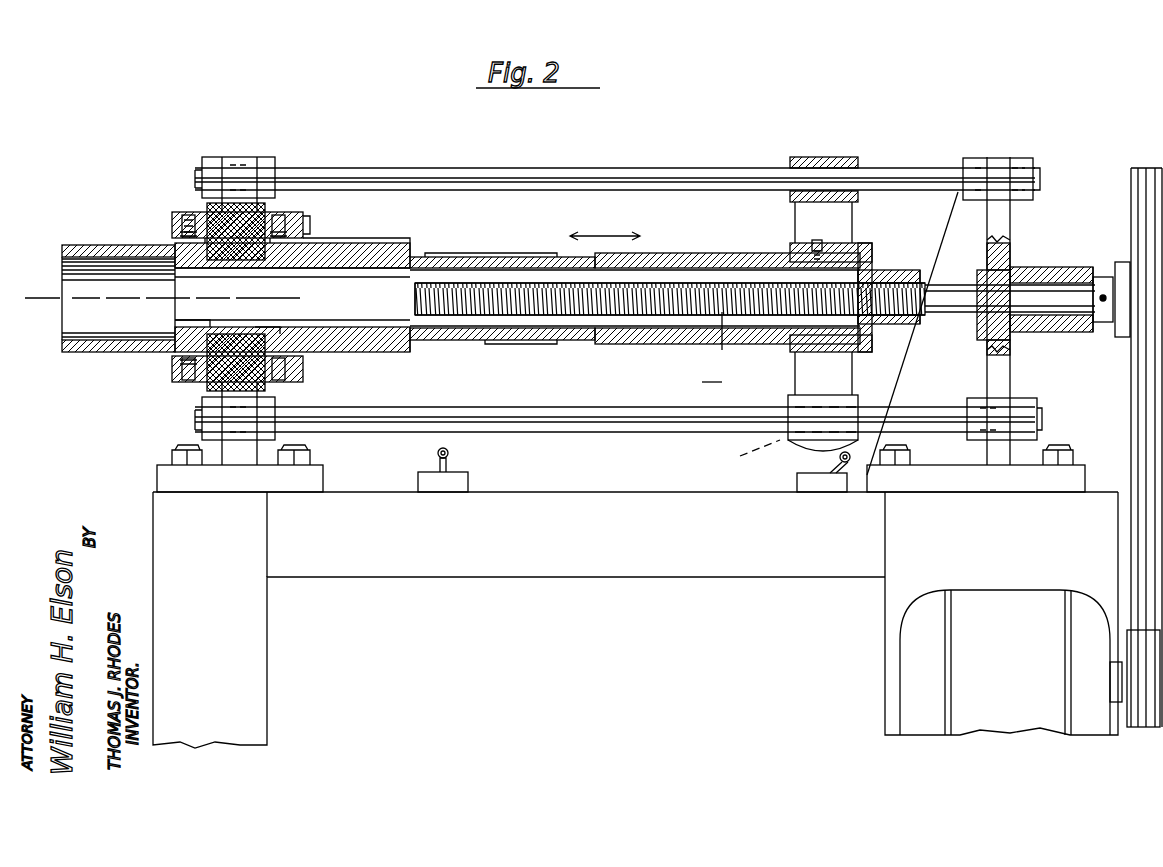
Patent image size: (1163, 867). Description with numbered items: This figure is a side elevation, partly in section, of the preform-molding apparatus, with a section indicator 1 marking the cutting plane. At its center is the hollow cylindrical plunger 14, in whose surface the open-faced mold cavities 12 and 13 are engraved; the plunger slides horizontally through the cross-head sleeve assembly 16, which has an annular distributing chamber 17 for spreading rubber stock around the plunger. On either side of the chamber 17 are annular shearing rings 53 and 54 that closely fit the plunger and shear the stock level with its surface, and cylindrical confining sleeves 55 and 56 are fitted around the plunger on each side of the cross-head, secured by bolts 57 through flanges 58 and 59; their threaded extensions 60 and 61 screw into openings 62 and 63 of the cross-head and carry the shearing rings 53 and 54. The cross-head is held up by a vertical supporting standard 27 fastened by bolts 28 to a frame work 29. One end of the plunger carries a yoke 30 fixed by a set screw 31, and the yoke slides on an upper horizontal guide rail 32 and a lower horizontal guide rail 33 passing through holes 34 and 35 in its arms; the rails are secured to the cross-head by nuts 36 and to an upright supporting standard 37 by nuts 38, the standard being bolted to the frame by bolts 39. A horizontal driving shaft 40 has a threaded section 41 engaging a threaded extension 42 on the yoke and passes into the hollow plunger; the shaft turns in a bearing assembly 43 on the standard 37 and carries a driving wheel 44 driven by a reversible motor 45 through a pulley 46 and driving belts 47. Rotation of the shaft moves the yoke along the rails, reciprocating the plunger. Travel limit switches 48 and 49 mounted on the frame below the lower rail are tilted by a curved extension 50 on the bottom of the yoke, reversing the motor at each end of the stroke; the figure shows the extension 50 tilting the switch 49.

The section line / lead screw axis 1 is at (41, 310).
The mold cavity 12 is at (335, 252).
The mold cavity 13 is at (530, 258).
The cylindrical plunger 14 is at (705, 257).
The cross-head sleeve assembly 16 is at (159, 213).
The annular distributing chamber 17 is at (210, 385).
The vertical supporting standard 27 is at (240, 475).
The bolts 28 is at (170, 452).
The frame work 29 is at (635, 620).
The yoke 30 is at (845, 248).
The set screw 31 is at (812, 236).
The upper horizontal guide rail 32 is at (645, 158).
The lower horizontal guide rail 33 is at (590, 432).
The hole 34 is at (805, 145).
The hole 35 is at (786, 438).
The nuts 36 is at (205, 157).
The upright supporting standard 37 is at (1015, 372).
The nuts 38 is at (1022, 158).
The bolts 39 is at (1060, 448).
The driving shaft 40 is at (958, 320).
The threaded section 41 is at (668, 318).
The threaded extension 42 is at (885, 278).
The bearing assembly 43 is at (1055, 258).
The driving wheel 44 is at (1130, 190).
The reversible motor 45 is at (1003, 613).
The pulley 46 is at (1140, 730).
The driving belts 47 is at (1138, 444).
The travel limit switch 48 is at (447, 492).
The travel limit switch 49 is at (808, 492).
The curved extension 50 is at (795, 462).
The annular shearing ring 53 is at (185, 318).
The annular shearing ring 54 is at (270, 330).
The cylindrical confining sleeve 55 is at (105, 245).
The cylindrical confining sleeve 56 is at (360, 245).
The bolts 57 is at (305, 222).
The flange 58 is at (185, 210).
The flange 59 is at (300, 212).
The threaded extension 60 is at (170, 362).
The threaded extension 61 is at (285, 380).
The opening 62 is at (170, 232).
The opening 63 is at (278, 210).